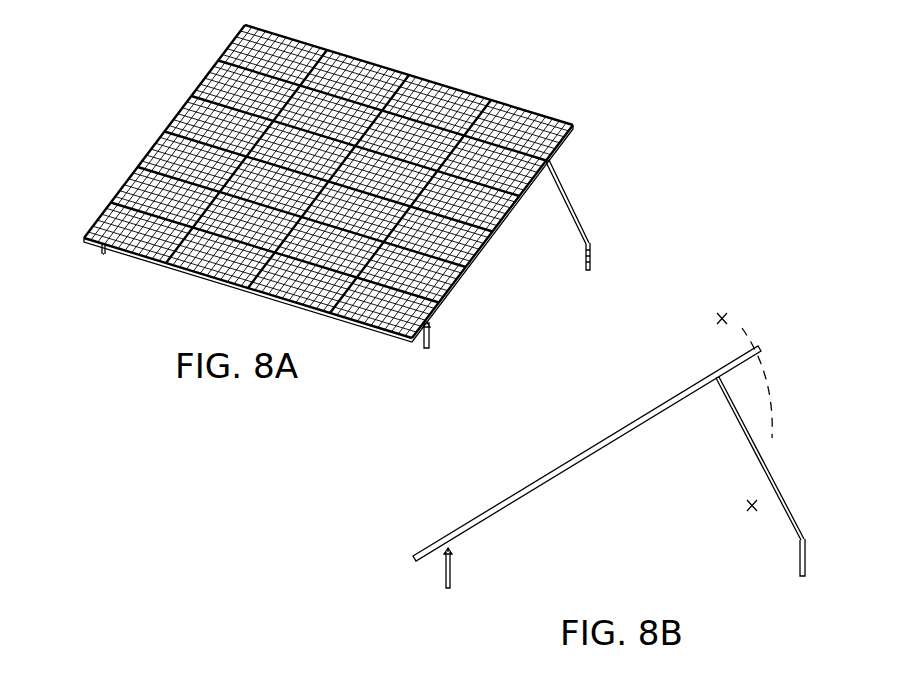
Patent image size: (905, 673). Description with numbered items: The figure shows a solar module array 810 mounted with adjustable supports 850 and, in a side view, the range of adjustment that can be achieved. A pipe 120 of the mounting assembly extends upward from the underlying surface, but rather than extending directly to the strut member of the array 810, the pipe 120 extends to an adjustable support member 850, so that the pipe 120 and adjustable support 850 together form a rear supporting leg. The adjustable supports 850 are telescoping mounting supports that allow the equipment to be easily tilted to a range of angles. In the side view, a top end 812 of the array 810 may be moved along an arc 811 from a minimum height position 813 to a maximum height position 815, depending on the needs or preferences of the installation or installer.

In FIG. 8A, the pipe 120 is at (591, 258).
In FIG. 8B, the pipe 120 is at (799, 561).
In FIG. 8A, the solar module array 810 is at (513, 262).
In FIG. 8A, the adjustable support member 850 is at (571, 203).
In FIG. 8B, the arc 811 is at (772, 412).
In FIG. 8B, the top end 812 is at (768, 375).
In FIG. 8B, the minimum height position 813 is at (760, 503).
In FIG. 8B, the maximum height position 815 is at (732, 311).